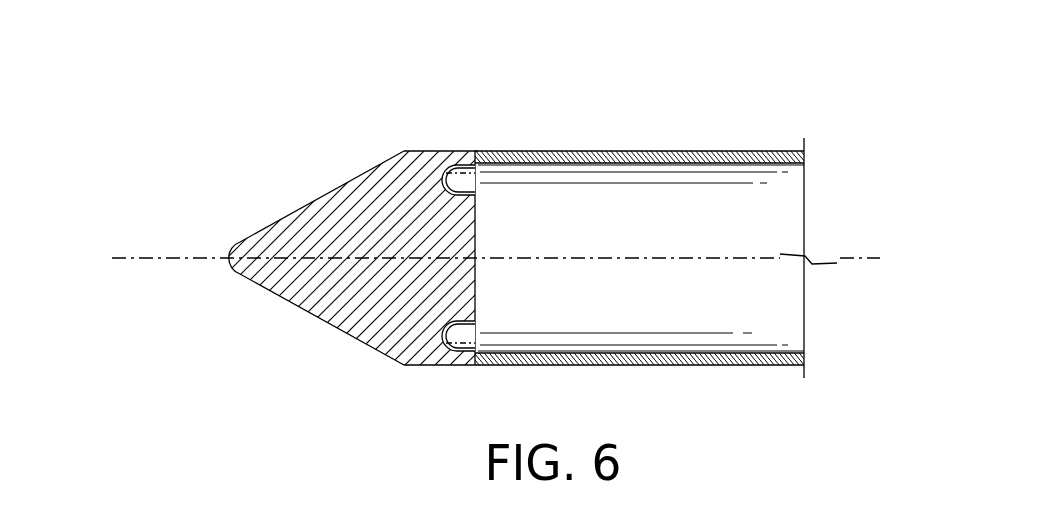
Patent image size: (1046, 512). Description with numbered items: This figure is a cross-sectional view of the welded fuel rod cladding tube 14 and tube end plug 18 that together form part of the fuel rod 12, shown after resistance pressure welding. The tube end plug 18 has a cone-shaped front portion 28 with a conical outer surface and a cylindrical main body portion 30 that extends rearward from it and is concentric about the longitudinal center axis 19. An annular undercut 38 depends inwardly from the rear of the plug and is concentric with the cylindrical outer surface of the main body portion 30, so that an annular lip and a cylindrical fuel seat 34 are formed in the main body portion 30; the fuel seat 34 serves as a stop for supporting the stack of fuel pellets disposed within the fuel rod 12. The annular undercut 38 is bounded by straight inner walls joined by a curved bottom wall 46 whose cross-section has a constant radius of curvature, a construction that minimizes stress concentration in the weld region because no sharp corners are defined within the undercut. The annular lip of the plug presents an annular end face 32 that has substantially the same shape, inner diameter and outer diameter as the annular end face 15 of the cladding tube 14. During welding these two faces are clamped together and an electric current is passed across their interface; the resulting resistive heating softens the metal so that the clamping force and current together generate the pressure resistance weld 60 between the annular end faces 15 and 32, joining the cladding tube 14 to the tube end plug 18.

The fuel rod 12 is at (639, 265).
The cladding tube 14 is at (663, 151).
The annular end face 15 is at (473, 153).
The tube end plug 18 is at (354, 218).
The longitudinal center axis 19 is at (147, 257).
The front portion 28 is at (320, 197).
The cylindrical main body portion 30 is at (414, 151).
The annular end face 32 is at (481, 361).
The cylindrical fuel seat 34 is at (634, 258).
The annular undercut 38 is at (502, 183).
The bottom wall 46 is at (461, 343).
The pressure resistance weld 60 is at (487, 132).